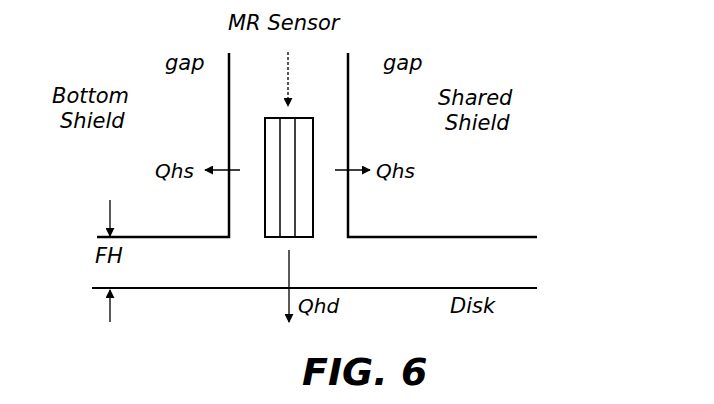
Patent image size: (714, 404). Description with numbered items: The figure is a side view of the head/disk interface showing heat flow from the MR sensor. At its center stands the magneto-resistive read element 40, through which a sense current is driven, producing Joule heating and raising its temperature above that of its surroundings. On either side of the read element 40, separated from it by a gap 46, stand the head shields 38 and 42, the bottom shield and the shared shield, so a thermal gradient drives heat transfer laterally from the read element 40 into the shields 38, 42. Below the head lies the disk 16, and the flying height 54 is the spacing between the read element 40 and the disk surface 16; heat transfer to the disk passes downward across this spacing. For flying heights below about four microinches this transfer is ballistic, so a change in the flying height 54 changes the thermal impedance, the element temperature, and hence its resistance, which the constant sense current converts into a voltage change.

The disk 16 is at (527, 283).
The head shield 38 is at (148, 239).
The magneto-resistive read element 40 is at (313, 212).
The head shield 42 is at (525, 241).
The gap 46 is at (241, 133).
The flying height 54 is at (110, 320).